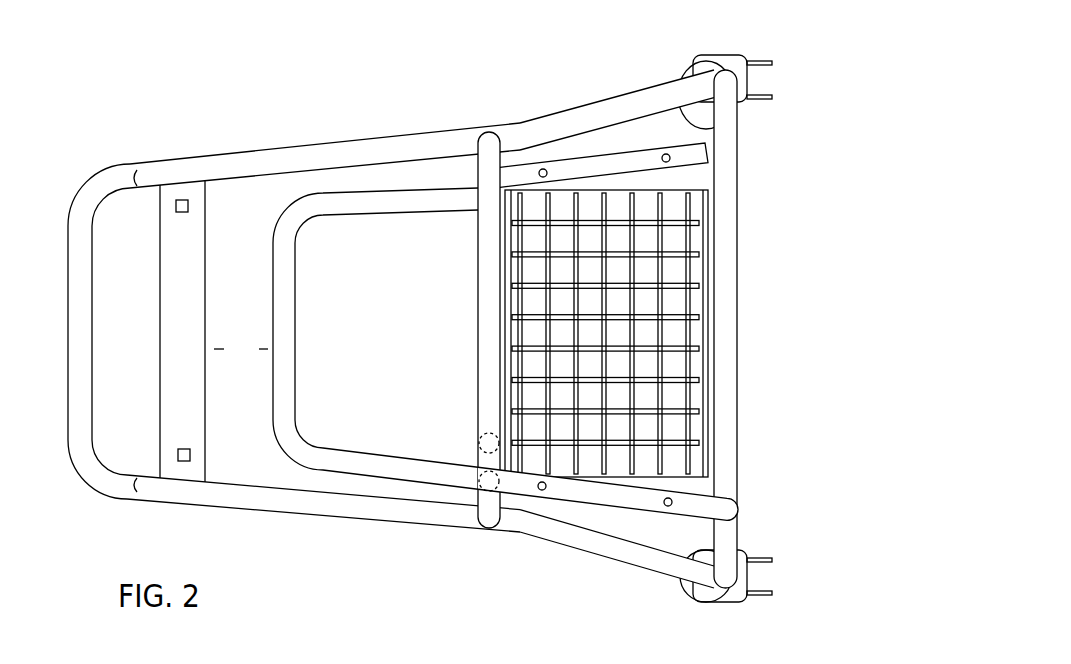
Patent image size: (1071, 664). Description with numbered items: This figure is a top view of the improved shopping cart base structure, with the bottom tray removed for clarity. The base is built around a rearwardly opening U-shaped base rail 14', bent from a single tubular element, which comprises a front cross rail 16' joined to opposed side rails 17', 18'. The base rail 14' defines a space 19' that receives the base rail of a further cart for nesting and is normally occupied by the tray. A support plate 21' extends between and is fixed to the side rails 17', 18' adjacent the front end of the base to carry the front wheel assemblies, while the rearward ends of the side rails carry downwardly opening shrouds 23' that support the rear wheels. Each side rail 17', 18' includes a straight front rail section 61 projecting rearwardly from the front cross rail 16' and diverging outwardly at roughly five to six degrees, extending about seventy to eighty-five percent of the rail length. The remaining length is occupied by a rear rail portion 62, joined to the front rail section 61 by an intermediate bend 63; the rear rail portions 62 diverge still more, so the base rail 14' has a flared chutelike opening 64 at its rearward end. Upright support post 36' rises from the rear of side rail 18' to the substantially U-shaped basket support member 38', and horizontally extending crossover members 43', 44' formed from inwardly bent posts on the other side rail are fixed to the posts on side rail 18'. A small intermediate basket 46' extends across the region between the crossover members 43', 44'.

The base rail 14' is at (365, 324).
The front cross rail 16' is at (73, 331).
The side rail 17' is at (325, 134).
The side rail 18' is at (323, 526).
The space 19' is at (241, 349).
The support plate 21' is at (157, 331).
The shroud 23' is at (701, 309).
The support post 36' is at (639, 507).
The basket support member 38' is at (375, 338).
The crossover member 43' is at (754, 329).
The crossover member 44' is at (455, 330).
The intermediate basket 46' is at (559, 333).
The front rail section 61 is at (323, 328).
The rear rail portion 62 is at (630, 105).
The intermediate bend 63 is at (527, 137).
The flared chutelike opening 64 is at (707, 110).